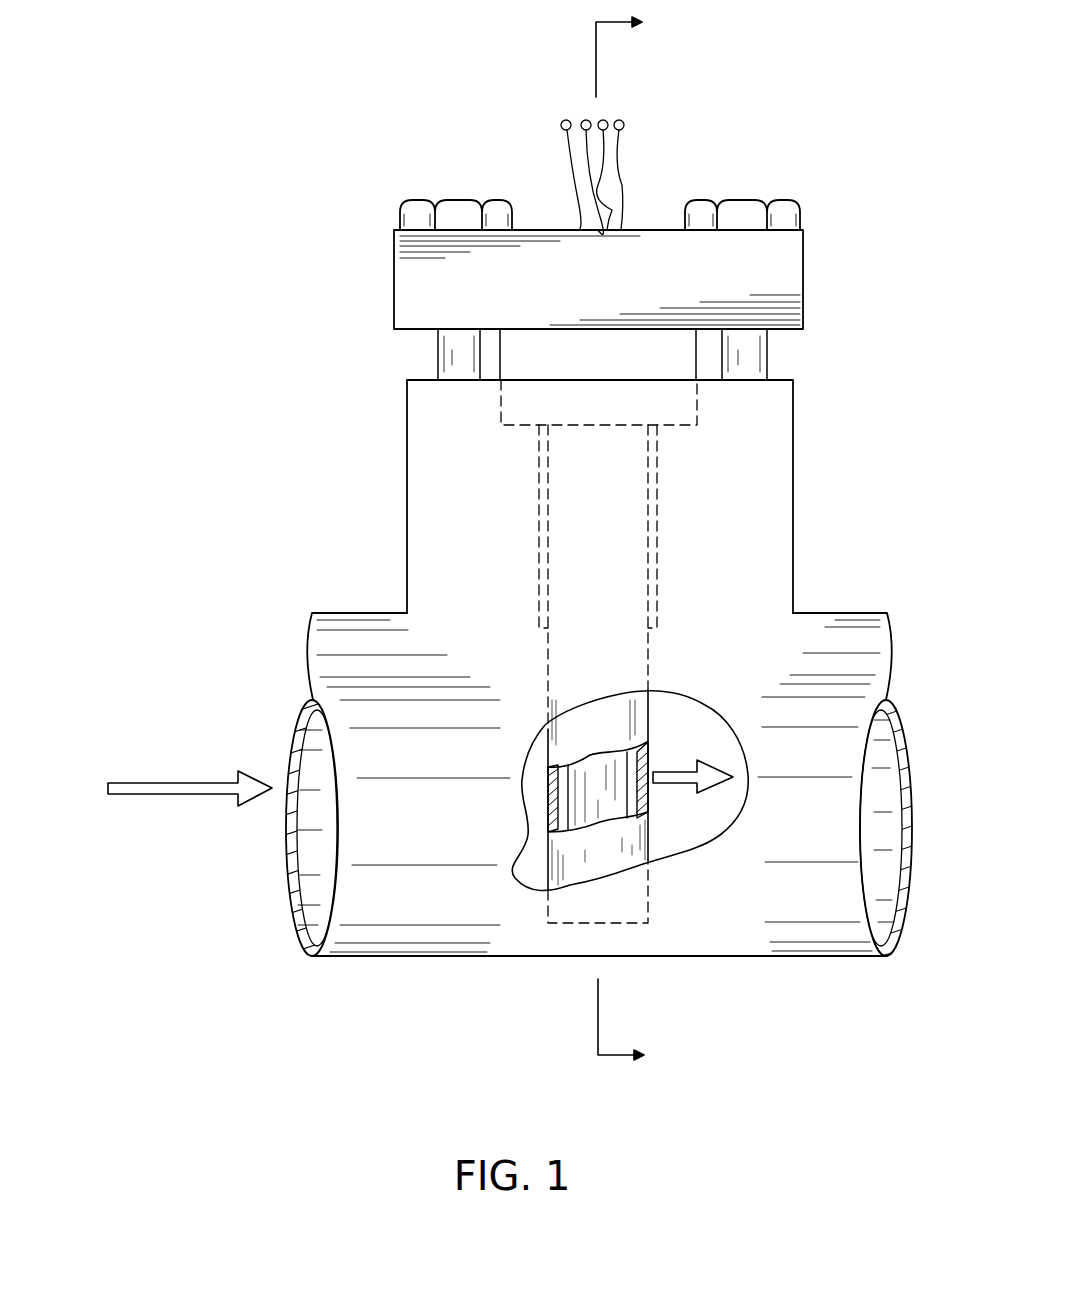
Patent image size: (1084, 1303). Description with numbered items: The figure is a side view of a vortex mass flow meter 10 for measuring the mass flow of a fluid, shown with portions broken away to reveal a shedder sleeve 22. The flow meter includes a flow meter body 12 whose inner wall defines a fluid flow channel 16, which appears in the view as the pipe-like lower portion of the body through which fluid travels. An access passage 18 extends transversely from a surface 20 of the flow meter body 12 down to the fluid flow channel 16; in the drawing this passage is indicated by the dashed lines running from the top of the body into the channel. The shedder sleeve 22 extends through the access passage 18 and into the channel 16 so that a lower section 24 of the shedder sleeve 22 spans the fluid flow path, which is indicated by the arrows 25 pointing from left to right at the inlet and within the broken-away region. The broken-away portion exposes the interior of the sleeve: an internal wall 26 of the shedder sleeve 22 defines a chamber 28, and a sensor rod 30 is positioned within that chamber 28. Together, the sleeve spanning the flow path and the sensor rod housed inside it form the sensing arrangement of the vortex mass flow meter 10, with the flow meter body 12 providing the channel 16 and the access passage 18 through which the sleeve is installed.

The vortex mass flow meter 10 is at (883, 298).
The flow meter body 12 is at (793, 450).
The fluid flow channel 16 is at (652, 731).
The access passage 18 is at (657, 542).
The surface 20 is at (780, 380).
The shedder sleeve 22 is at (650, 657).
The lower section 24 is at (649, 835).
The arrows 25 is at (168, 783).
The internal wall 26 is at (560, 775).
The chamber 28 is at (623, 762).
The sensor rod 30 is at (596, 805).